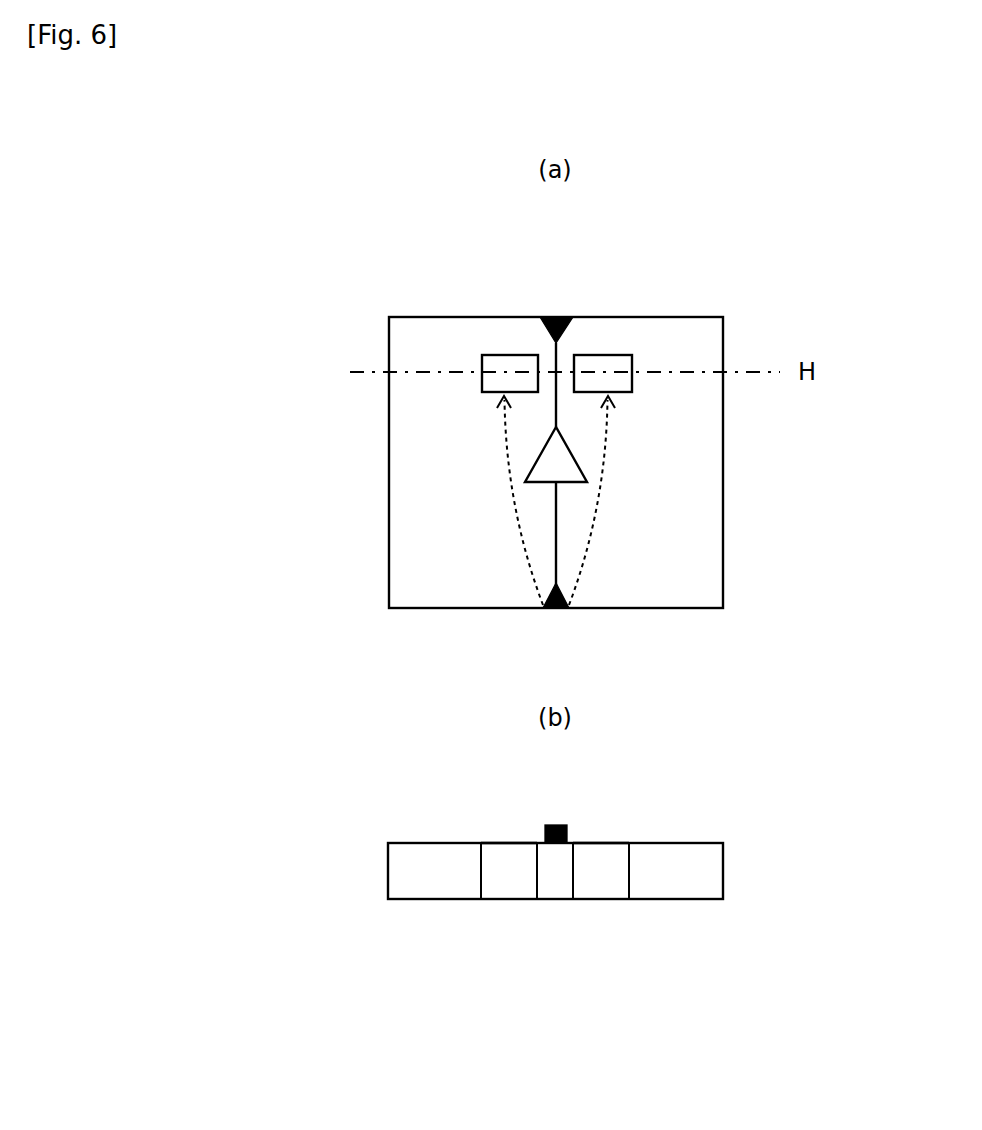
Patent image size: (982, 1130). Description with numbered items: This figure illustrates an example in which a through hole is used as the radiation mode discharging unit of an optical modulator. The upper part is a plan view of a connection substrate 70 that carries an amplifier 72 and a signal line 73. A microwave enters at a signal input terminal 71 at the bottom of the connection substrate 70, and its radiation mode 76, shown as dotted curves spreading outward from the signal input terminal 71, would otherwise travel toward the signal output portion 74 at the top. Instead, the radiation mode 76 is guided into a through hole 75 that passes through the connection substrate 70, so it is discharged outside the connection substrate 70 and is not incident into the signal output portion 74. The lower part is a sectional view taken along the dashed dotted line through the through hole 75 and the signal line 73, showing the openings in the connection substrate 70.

The connection substrate 70 is at (737, 479).
The signal input terminal 71 is at (560, 608).
The amplifier 72 is at (555, 463).
The signal line 73 is at (555, 408).
The signal output portion 74 is at (562, 317).
The through hole 75 is at (604, 371).
The radiation mode 76 is at (603, 525).